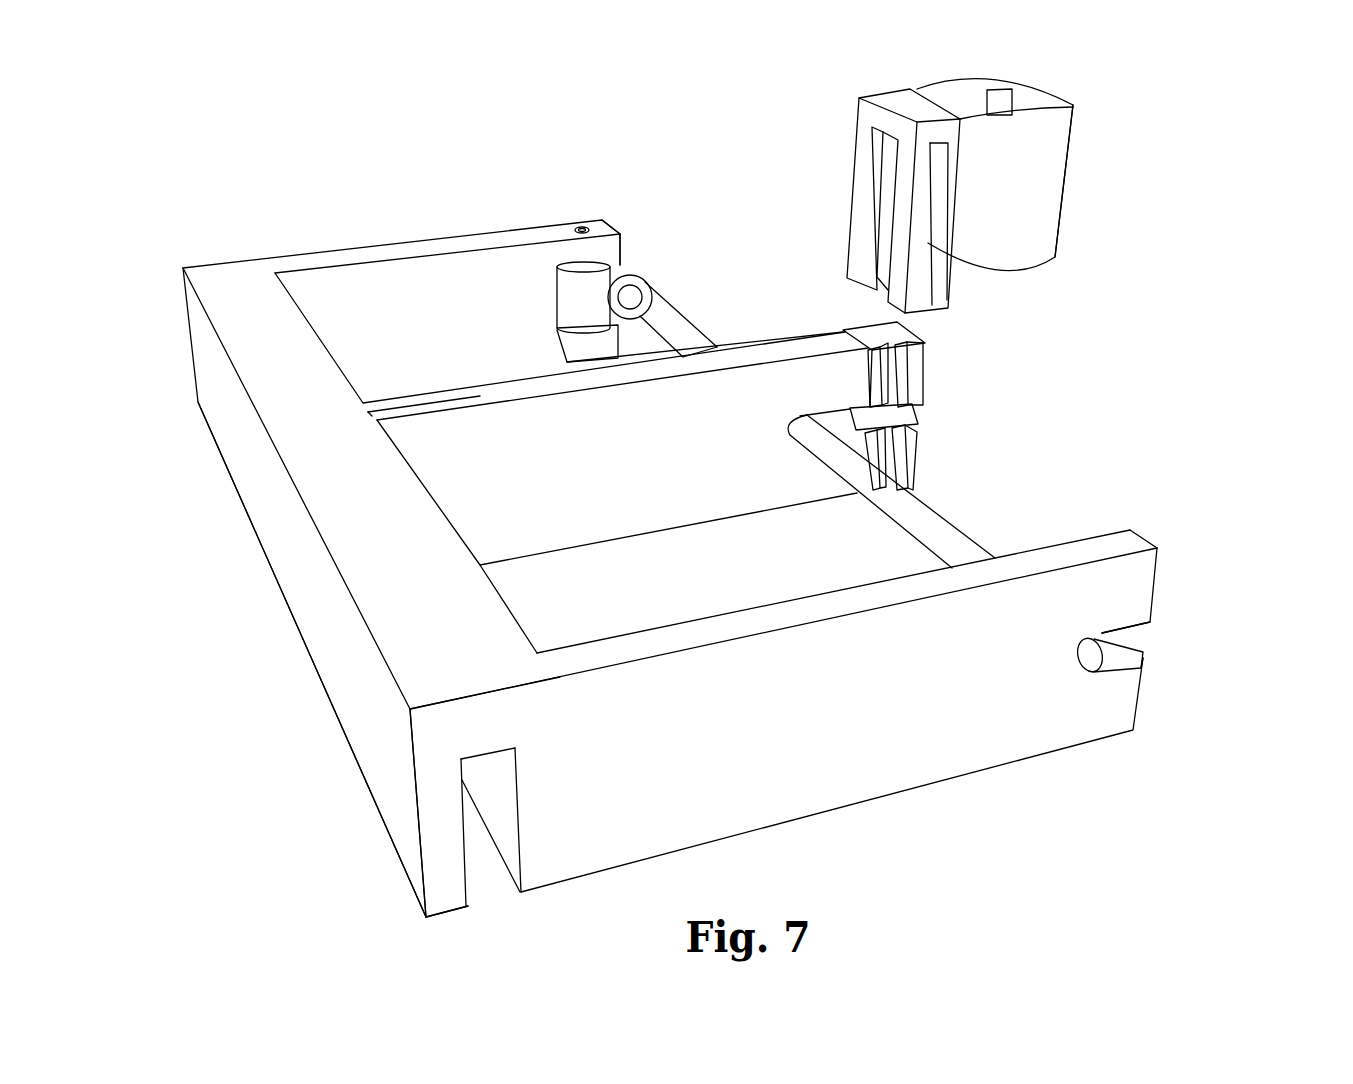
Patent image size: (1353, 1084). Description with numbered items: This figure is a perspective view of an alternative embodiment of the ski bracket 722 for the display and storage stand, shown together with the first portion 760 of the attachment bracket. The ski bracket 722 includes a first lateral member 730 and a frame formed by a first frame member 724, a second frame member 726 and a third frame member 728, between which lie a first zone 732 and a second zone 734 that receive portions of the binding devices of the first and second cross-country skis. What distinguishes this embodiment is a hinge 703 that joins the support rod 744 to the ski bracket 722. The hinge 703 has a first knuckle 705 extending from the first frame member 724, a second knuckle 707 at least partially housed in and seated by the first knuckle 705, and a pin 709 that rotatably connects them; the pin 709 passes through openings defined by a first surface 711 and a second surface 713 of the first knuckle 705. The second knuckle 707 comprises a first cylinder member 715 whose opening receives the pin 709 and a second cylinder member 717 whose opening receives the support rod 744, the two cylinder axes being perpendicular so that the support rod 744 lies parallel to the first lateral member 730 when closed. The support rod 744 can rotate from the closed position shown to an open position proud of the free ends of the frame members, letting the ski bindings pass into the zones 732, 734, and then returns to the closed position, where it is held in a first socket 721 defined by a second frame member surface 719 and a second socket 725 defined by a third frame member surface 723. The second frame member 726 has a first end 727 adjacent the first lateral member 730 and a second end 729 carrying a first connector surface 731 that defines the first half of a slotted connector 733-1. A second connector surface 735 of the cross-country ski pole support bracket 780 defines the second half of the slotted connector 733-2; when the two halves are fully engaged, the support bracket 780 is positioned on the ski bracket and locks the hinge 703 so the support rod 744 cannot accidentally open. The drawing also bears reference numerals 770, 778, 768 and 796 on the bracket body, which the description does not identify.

The ski bracket 722 is at (304, 200).
The first surface 711 is at (572, 210).
The pin 709 is at (592, 225).
The first knuckle 705 is at (596, 287).
The second cylinder member 717 is at (641, 252).
The hinge 703 is at (686, 249).
The second knuckle 707 is at (665, 285).
The support rod 744 is at (684, 340).
The second zone 734 is at (486, 326).
The first cylinder member 715 is at (557, 288).
The second surface 713 is at (561, 364).
The first frame member 724 is at (393, 333).
The second frame member 726 is at (535, 491).
The first zone 732 is at (671, 593).
The first lateral member 730 is at (338, 383).
The first end 727 is at (368, 413).
The side wall 770 is at (312, 590).
The top edge 778 is at (477, 733).
The first portion of the attachment bracket 760 is at (440, 795).
The foot 768 is at (473, 887).
The slot 796 is at (507, 822).
The third frame member 728 is at (710, 736).
The second connector surface 735 is at (855, 192).
The second half of the slotted connector 733-2 is at (892, 103).
The first half of the slotted connector 733-1 is at (900, 327).
The first connector surface 731 is at (862, 203).
The second end 729 is at (907, 332).
The first socket 721 is at (945, 402).
The second frame member surface 719 is at (880, 420).
The cross-country ski pole support bracket 780 is at (1110, 235).
The second socket 725 is at (1176, 630).
The third frame member surface 723 is at (1143, 650).